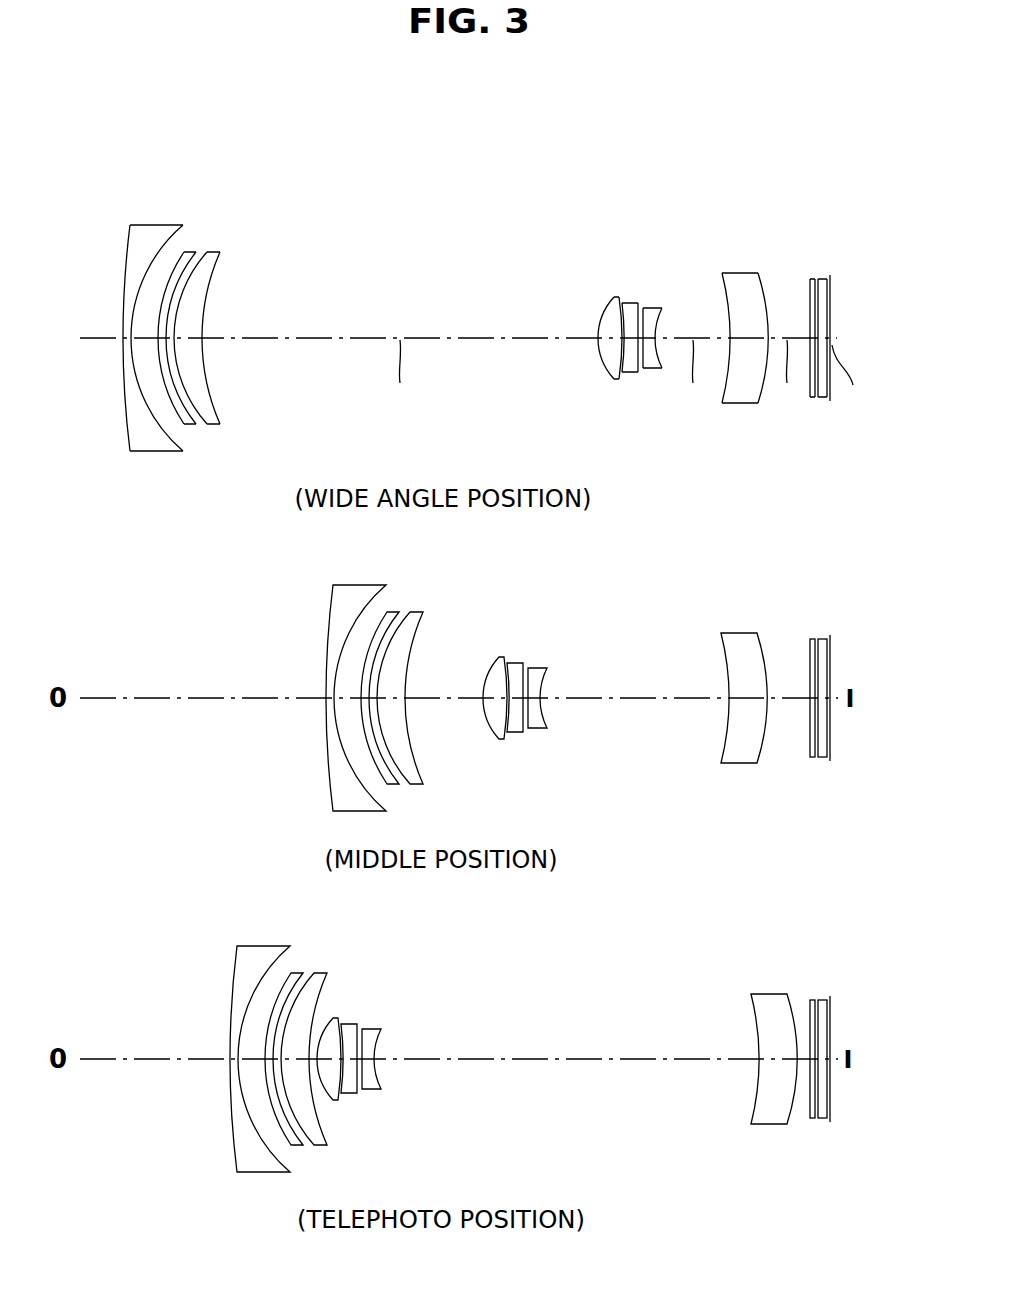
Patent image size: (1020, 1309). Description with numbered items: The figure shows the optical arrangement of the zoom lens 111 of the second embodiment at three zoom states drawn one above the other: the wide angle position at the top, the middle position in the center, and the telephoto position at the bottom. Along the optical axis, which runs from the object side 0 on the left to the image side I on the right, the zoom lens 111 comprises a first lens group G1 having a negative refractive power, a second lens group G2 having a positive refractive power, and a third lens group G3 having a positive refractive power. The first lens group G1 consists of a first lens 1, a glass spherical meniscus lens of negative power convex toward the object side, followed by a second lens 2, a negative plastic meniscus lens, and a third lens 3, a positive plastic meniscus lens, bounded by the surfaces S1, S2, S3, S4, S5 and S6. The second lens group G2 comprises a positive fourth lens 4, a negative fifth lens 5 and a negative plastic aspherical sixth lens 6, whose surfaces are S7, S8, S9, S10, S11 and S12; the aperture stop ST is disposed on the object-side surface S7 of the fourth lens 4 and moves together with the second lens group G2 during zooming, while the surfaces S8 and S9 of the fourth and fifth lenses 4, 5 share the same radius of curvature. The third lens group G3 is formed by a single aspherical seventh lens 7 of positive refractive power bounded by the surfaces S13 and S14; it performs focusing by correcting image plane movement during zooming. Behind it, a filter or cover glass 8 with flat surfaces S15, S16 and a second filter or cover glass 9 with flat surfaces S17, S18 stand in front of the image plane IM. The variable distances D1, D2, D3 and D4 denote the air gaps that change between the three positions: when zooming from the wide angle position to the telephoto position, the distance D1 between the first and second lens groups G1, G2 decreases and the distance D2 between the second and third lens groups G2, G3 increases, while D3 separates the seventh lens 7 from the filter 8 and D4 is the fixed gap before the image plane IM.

The zoom lens 111 is at (416, 135).
The first lens group G1 is at (215, 137).
The second lens group G2 is at (600, 139).
The third lens group G3 is at (723, 139).
The first lens 1 is at (127, 329).
The second lens 2 is at (167, 319).
The third lens 3 is at (217, 342).
The fourth lens 4 is at (554, 334).
The fifth lens 5 is at (615, 341).
The sixth lens 6 is at (661, 333).
The seventh lens 7 is at (737, 326).
The filter or cover glass 8 is at (827, 331).
The filter or cover glass 9 is at (866, 357).
The image plane IM is at (847, 369).
The image side I is at (842, 338).
The object side 0 is at (443, 338).
The lens surface S1 is at (122, 262).
The lens surface S2 is at (150, 262).
The lens surface S3 is at (177, 264).
The lens surface S4 is at (184, 272).
The lens surface S5 is at (190, 290).
The lens surface S6 is at (212, 292).
The lens surface S7 is at (550, 315).
The aperture stop ST is at (600, 318).
The lens surface S8 is at (617, 305).
The lens surface S9 is at (623, 337).
The lens surface S10 is at (638, 312).
The lens surface S11 is at (644, 312).
The lens surface S12 is at (661, 312).
The lens surface S13 is at (726, 300).
The lens surface S14 is at (765, 300).
The lens surface S15 is at (809, 284).
The lens surface S16 is at (817, 283).
The lens surface S17 is at (829, 283).
The lens surface S18 is at (828, 320).
The variable distance D1 is at (398, 376).
The variable distance D2 is at (700, 376).
The variable distance D3 is at (787, 376).
The variable distance D4 is at (853, 379).